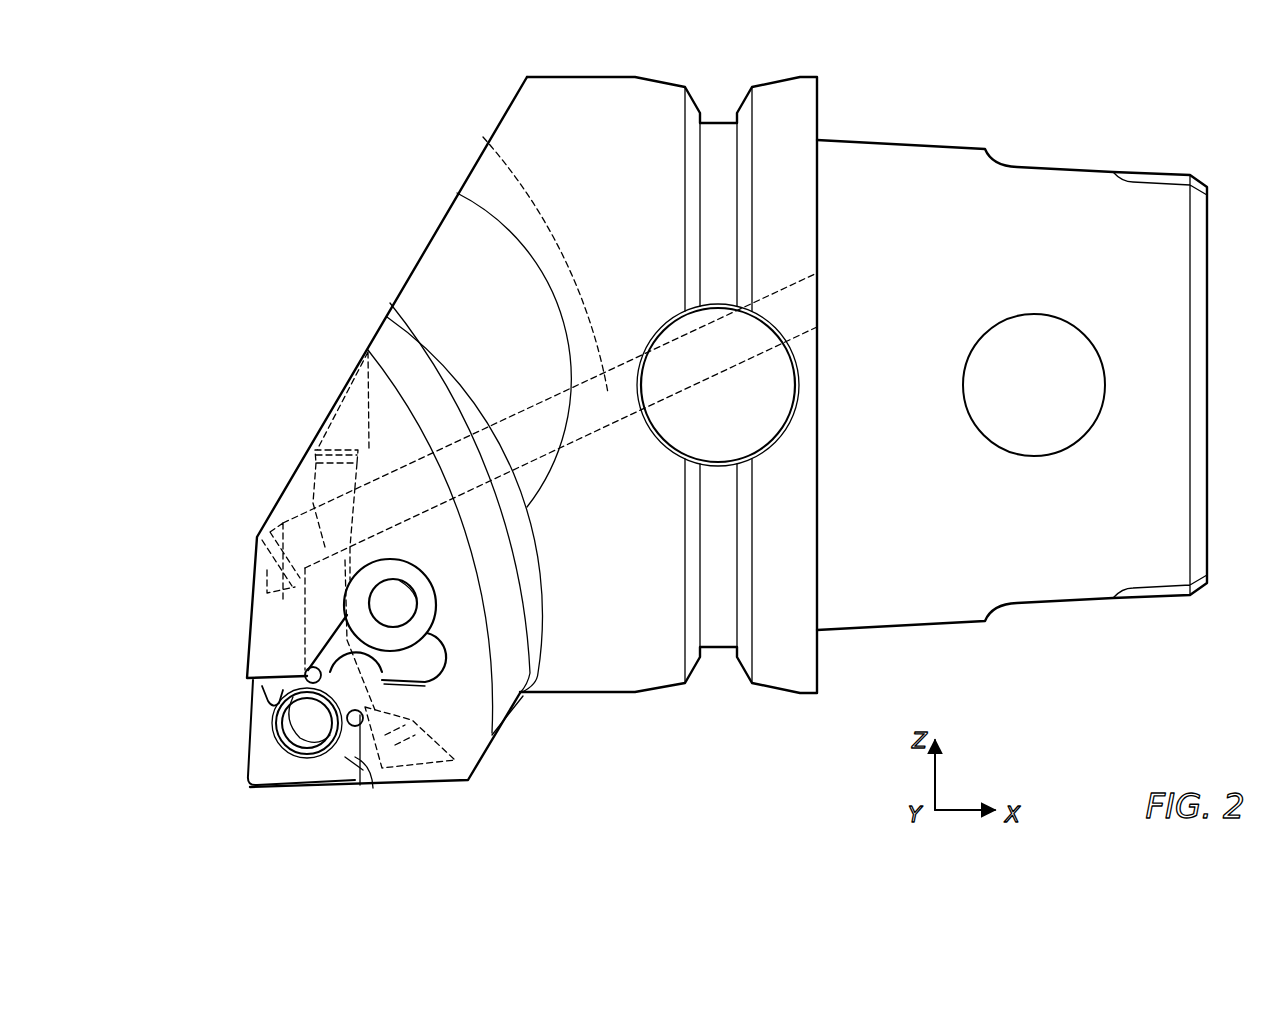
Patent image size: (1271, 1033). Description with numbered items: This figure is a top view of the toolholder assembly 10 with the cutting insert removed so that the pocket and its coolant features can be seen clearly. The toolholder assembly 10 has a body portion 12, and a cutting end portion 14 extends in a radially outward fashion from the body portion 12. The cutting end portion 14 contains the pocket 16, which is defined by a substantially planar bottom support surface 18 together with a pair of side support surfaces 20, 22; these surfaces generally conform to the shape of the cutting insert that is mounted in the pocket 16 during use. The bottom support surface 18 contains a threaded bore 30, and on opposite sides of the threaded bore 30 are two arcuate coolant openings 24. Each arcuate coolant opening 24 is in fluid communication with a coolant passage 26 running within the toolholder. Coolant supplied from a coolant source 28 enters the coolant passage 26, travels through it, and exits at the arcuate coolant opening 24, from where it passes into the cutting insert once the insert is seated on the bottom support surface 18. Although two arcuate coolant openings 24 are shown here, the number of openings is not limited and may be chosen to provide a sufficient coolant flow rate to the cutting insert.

The toolholder assembly 10 is at (246, 120).
The body portion 12 is at (960, 120).
The cutting end portion 14 is at (405, 241).
The pocket 16 is at (320, 792).
The bottom support surface 18 is at (267, 768).
The side support surface 20 is at (262, 700).
The side support surface 22 is at (358, 762).
The arcuate coolant opening 24 is at (282, 678).
The coolant passage 26 is at (315, 632).
The coolant source 28 is at (483, 137).
The threaded bore 30 is at (306, 736).